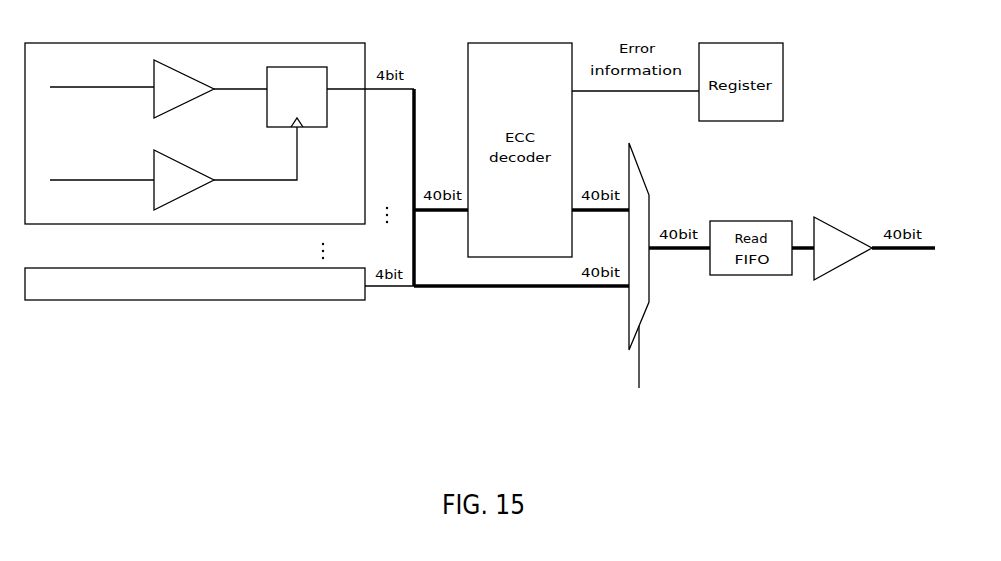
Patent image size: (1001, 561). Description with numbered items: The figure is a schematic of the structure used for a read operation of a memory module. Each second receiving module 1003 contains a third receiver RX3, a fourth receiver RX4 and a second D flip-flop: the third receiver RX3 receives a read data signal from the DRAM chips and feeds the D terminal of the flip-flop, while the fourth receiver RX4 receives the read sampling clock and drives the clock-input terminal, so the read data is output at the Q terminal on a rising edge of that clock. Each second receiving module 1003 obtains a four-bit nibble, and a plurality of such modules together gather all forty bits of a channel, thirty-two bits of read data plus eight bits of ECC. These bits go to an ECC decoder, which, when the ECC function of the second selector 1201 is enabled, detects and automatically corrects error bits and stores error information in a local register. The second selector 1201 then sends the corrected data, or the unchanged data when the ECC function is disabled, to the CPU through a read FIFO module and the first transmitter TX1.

The second receiving module 1003 is at (219, 159).
The second selector 1201 is at (638, 168).
The third receiver RX3 is at (132, 89).
The fourth receiver RX4 is at (132, 180).
The first transmitter TX1 is at (843, 248).